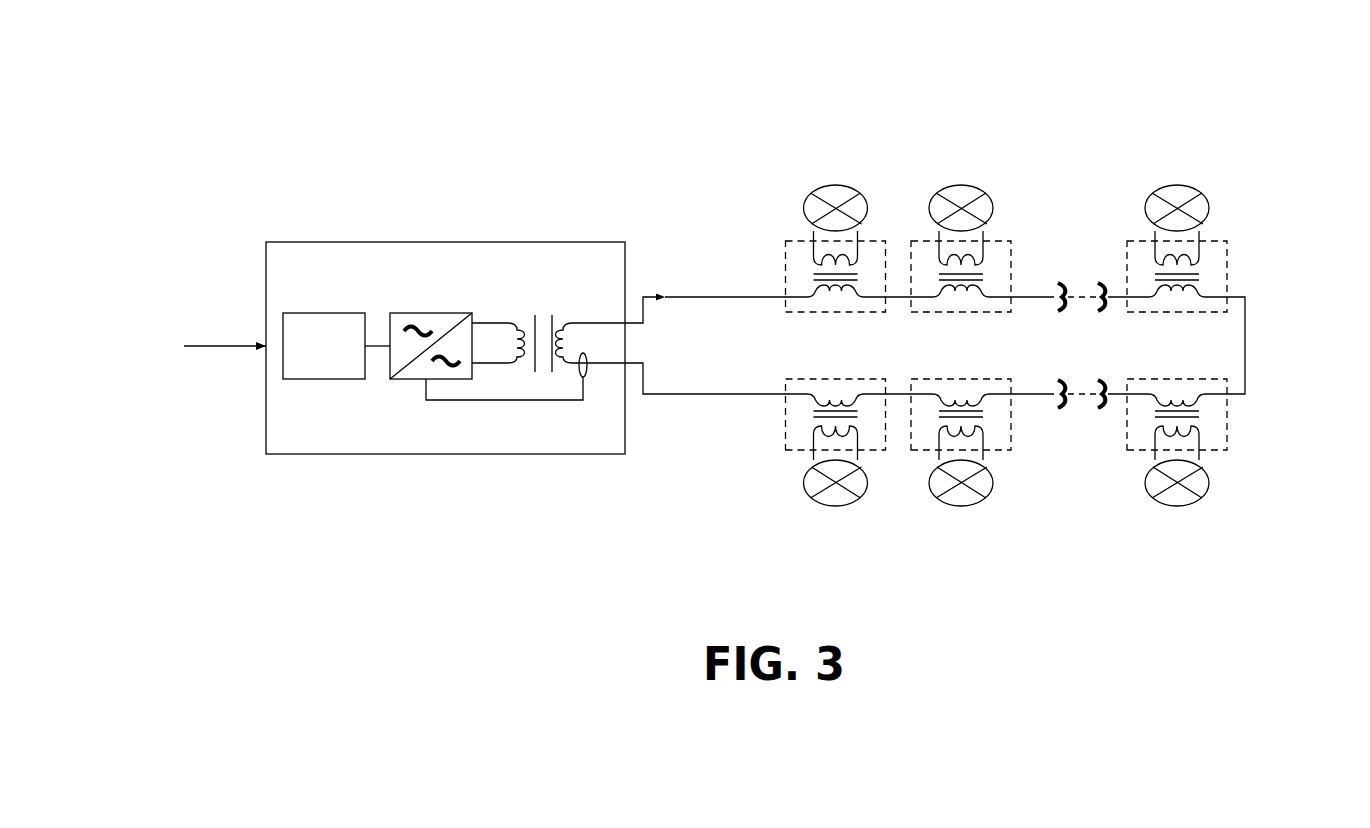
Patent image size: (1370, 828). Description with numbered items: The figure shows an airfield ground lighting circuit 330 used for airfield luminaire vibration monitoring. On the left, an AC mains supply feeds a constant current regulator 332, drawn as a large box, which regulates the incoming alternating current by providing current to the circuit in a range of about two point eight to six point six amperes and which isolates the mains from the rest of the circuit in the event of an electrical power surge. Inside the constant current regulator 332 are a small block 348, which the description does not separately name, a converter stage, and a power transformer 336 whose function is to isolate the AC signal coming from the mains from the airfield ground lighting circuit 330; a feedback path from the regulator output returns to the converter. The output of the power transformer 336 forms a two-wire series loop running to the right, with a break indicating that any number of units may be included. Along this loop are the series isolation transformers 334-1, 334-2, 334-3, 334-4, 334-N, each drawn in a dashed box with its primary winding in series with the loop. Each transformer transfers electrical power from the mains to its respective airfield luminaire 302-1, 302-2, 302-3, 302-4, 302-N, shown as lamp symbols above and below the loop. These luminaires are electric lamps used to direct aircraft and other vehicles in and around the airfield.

The airfield ground lighting circuit 330 is at (362, 128).
The constant current regulator 332 is at (264, 435).
The rectifier / power conditioning block 348 is at (327, 296).
The power transformer 336 is at (530, 293).
The airfield luminaire 302-1 is at (837, 185).
The airfield luminaire 302-2 is at (962, 185).
The airfield luminaire 302-3 is at (832, 507).
The airfield luminaire 302-4 is at (957, 507).
The airfield luminaire 302-N is at (1178, 185).
The series isolation transformer 334-1 is at (786, 300).
The series isolation transformer 334-2 is at (1011, 302).
The series isolation transformer 334-3 is at (786, 427).
The series isolation transformer 334-4 is at (1011, 428).
The series isolation transformer 334-N is at (1227, 268).